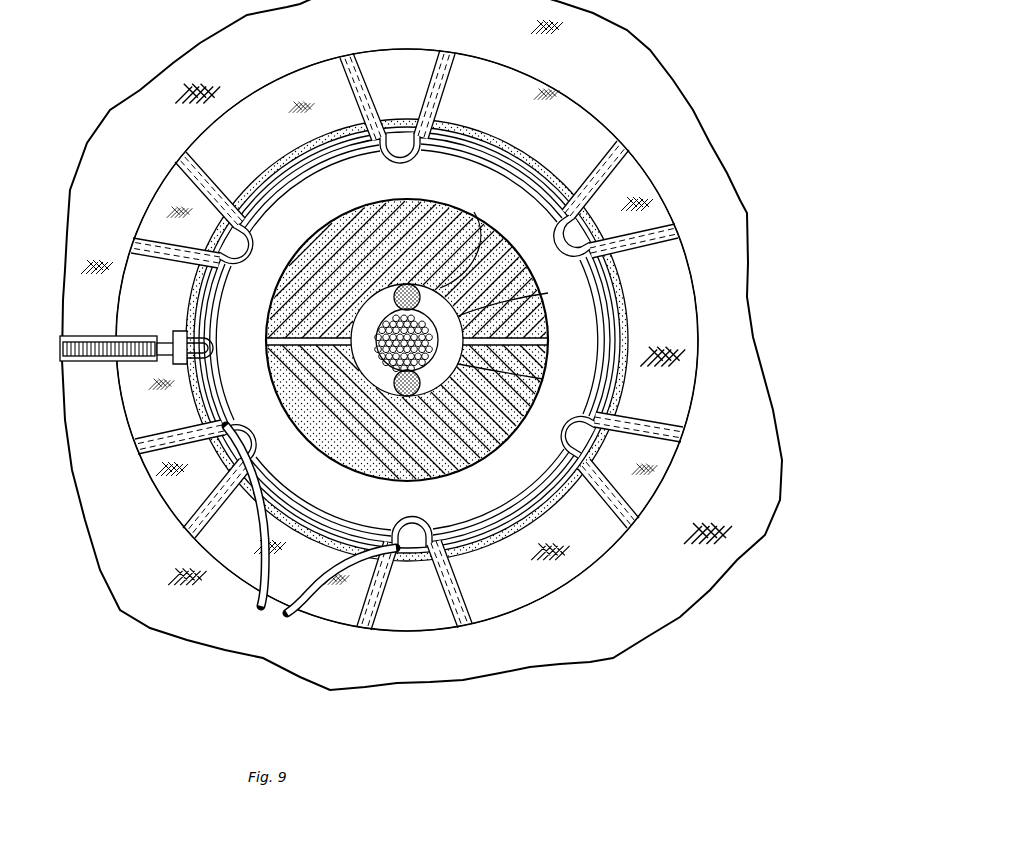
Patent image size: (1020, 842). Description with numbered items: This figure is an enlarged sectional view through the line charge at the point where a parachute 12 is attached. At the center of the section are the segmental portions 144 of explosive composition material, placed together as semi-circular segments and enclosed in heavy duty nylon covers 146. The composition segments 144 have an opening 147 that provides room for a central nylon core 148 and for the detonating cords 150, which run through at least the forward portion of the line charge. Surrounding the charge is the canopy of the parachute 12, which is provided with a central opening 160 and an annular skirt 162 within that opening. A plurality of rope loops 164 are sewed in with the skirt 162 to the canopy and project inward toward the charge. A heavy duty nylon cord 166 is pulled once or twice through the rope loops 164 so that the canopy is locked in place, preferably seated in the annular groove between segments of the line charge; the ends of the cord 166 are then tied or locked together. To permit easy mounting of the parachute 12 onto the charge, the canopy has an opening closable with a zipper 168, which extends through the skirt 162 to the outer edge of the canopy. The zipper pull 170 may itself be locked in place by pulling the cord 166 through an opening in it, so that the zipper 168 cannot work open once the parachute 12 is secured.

The parachute 12 is at (526, 666).
The segmental portions of explosive composition material 144 is at (385, 198).
The heavy duty nylon cover 146 is at (268, 303).
The opening 147 is at (357, 357).
The central nylon core 148 is at (533, 263).
The detonating cord 150 is at (474, 212).
The central opening 160 is at (550, 594).
The annular skirt 162 is at (597, 538).
The rope loop 164 is at (449, 70).
The heavy duty nylon cord 166 is at (256, 591).
The zipper 168 is at (58, 349).
The zipper pull 170 is at (183, 330).